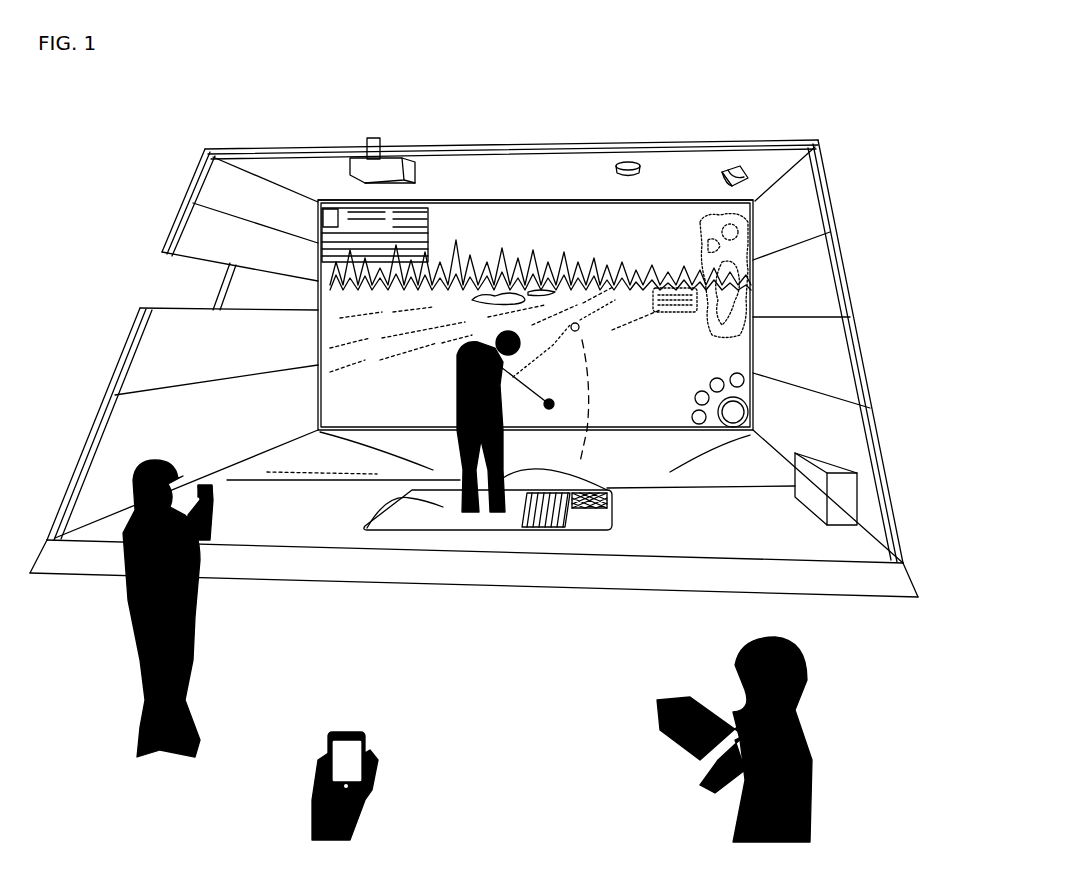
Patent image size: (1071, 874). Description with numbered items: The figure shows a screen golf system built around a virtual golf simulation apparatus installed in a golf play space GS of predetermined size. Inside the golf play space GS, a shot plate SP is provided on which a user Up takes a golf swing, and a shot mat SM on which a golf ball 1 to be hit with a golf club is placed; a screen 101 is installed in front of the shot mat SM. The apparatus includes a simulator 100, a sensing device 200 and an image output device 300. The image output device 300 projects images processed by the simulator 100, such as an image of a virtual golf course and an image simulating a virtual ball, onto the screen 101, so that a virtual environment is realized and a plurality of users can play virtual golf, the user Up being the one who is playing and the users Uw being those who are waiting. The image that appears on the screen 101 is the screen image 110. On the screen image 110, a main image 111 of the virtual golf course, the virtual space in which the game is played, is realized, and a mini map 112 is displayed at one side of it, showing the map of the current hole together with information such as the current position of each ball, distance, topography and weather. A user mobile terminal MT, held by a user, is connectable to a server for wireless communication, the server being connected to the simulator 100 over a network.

The golf play space GS is at (170, 206).
The screen image 110 is at (760, 351).
The screen 101 is at (757, 204).
The main image 111 is at (587, 244).
The mini map 112 is at (688, 249).
The user Up is at (451, 377).
The golf ball 1 is at (579, 332).
The image output device 300 is at (413, 168).
The sensing device 200 is at (730, 168).
The simulator 100 is at (829, 462).
The shot plate SP is at (370, 508).
The shot mat SM is at (608, 508).
The users Uw is at (208, 620).
The user mobile terminal MT is at (213, 490).